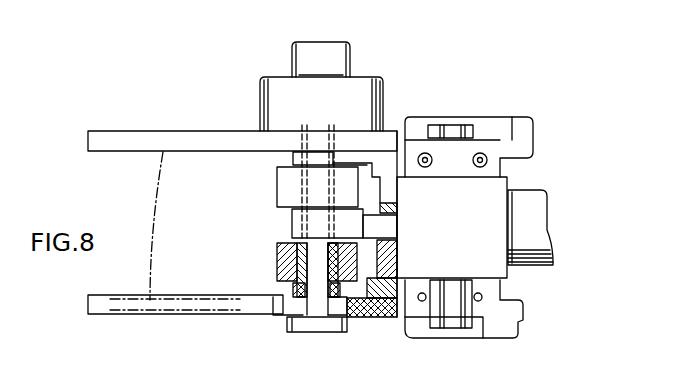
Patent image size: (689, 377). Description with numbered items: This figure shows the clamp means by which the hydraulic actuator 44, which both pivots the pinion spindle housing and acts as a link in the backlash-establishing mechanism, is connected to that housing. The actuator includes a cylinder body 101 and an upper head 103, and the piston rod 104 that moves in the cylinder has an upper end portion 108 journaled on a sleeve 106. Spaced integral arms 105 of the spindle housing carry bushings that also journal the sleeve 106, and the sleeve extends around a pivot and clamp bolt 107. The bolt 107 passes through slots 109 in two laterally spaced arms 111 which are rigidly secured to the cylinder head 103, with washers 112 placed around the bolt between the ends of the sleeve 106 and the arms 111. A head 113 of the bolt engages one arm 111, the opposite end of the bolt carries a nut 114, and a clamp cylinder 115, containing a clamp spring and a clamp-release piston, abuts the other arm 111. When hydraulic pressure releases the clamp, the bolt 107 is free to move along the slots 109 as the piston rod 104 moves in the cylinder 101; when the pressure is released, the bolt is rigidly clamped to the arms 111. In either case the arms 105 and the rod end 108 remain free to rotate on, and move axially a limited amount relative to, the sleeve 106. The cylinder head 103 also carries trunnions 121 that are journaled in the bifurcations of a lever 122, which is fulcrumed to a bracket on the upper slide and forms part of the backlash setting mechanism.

The hydraulic actuator 44 is at (385, 121).
The cylinder body 101 is at (527, 200).
The upper head 103 is at (452, 222).
The piston rod 104 is at (388, 228).
The arms 105 is at (281, 184).
The sleeve 106 is at (295, 256).
The pivot and clamp bolt 107 is at (297, 305).
The upper end portion of piston rod 108 is at (292, 222).
The slots 109 is at (340, 143).
The arms 111 is at (150, 140).
The washers 112 is at (293, 157).
The head 113 is at (303, 322).
The knob 114 is at (318, 50).
The clamp cylinder 115 is at (283, 97).
The trunnions 121 is at (452, 130).
The lever 122 is at (525, 137).